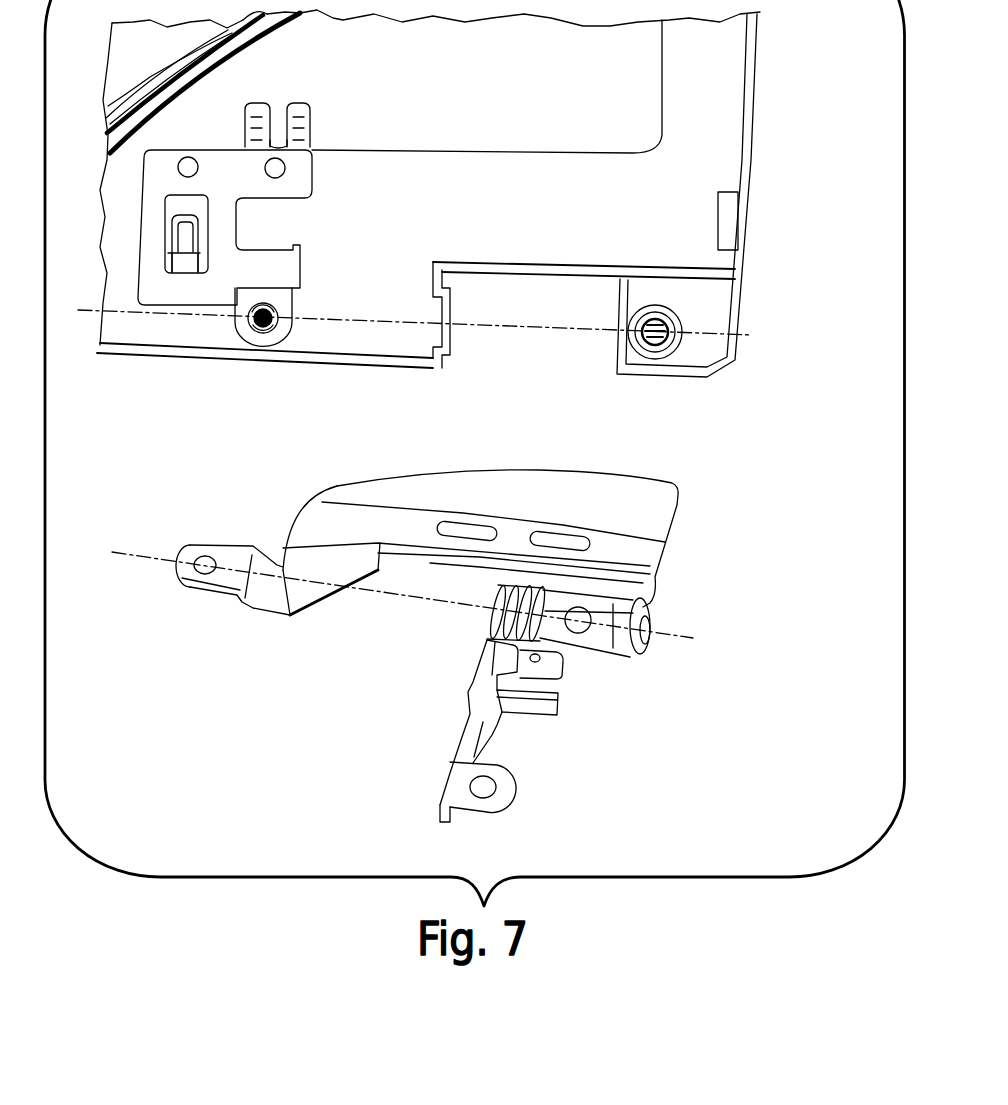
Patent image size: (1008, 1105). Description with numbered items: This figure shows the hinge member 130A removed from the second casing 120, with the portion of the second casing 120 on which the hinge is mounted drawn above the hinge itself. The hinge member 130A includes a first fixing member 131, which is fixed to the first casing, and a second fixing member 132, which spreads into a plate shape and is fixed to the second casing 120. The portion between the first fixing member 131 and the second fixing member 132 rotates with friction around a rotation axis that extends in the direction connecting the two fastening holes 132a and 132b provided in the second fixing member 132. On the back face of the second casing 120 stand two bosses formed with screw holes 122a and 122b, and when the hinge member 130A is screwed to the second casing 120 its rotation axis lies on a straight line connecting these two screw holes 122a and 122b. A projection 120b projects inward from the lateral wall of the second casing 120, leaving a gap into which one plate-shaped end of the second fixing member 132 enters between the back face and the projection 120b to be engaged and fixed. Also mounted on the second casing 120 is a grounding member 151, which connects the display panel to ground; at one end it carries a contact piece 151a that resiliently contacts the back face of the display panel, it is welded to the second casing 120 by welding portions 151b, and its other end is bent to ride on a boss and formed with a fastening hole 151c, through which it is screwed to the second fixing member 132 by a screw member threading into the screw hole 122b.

The second casing 120 is at (728, 60).
The projection 120b is at (730, 217).
The screw hole 122a is at (674, 317).
The screw hole 122b is at (277, 310).
The grounding member 151 is at (303, 173).
The contact piece 151a is at (313, 147).
The welding portions 151b is at (272, 160).
The fastening hole 151c is at (268, 334).
The hinge member 130A is at (692, 562).
The second fixing member 132 is at (427, 493).
The fastening hole 132a is at (646, 624).
The fastening hole 132b is at (223, 546).
The first fixing member 131 is at (466, 729).